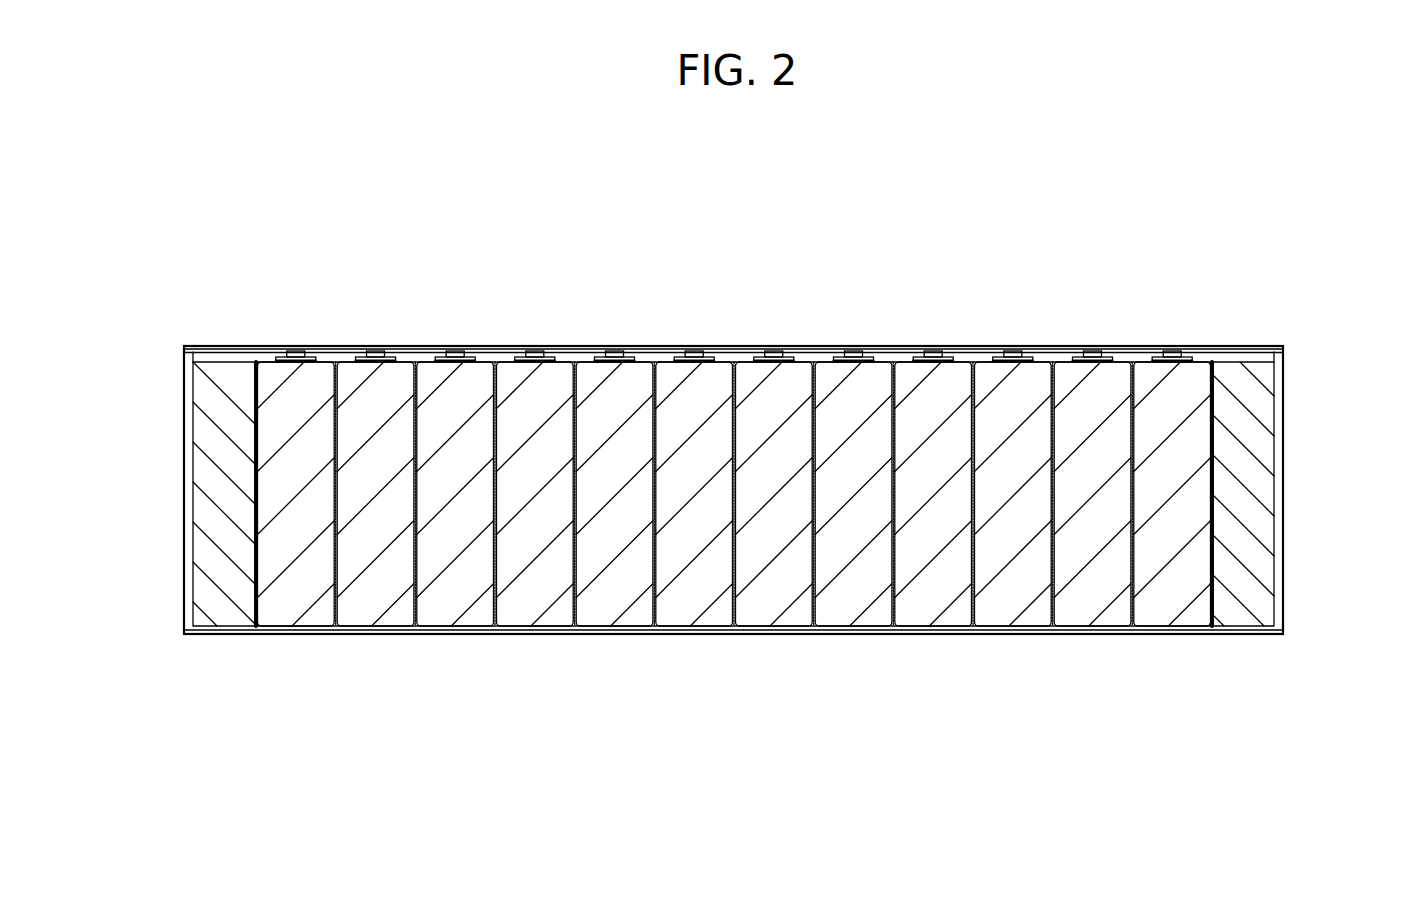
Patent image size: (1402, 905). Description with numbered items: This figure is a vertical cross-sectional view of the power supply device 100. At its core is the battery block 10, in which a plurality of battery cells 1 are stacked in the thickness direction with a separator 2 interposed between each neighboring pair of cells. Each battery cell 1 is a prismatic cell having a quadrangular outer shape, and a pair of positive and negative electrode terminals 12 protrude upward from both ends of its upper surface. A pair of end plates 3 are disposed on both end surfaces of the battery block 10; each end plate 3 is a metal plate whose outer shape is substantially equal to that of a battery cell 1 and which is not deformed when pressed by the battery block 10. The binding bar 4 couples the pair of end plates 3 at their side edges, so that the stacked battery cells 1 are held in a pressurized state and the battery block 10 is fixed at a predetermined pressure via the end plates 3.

The power supply device 100 is at (1173, 197).
The battery block 10 is at (273, 783).
The battery cell 1 is at (297, 592).
The separator 2 is at (337, 587).
The end plate 3 is at (208, 507).
The binding bar 4 is at (755, 347).
The electrode terminal 12 is at (295, 353).